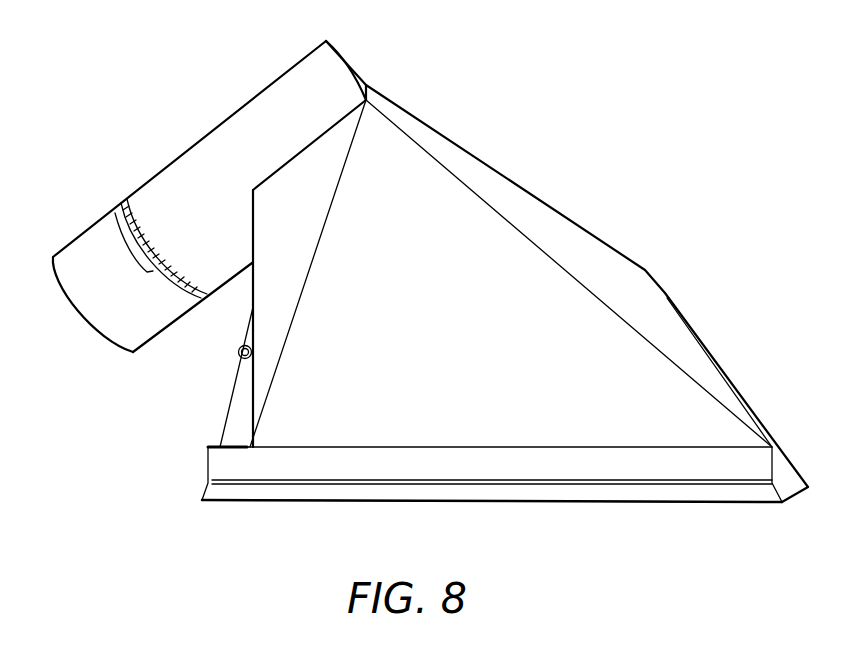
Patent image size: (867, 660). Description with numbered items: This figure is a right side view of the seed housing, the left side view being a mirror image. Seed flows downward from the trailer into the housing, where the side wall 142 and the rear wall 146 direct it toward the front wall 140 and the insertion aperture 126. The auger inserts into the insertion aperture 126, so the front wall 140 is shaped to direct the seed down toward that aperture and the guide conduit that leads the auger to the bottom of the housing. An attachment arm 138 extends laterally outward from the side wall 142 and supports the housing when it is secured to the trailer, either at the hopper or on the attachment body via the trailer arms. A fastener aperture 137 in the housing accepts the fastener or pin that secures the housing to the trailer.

The insertion aperture 126 is at (113, 316).
The fastener aperture 137 is at (238, 353).
The attachment arm 138 is at (332, 490).
The front wall 140 is at (260, 377).
The side wall 142 is at (402, 217).
The rear wall 146 is at (558, 233).